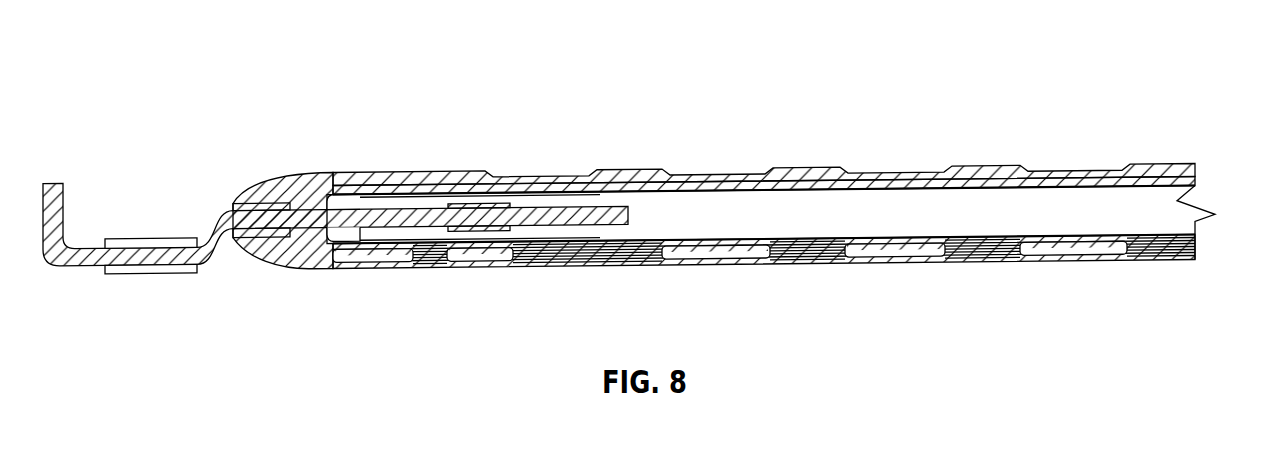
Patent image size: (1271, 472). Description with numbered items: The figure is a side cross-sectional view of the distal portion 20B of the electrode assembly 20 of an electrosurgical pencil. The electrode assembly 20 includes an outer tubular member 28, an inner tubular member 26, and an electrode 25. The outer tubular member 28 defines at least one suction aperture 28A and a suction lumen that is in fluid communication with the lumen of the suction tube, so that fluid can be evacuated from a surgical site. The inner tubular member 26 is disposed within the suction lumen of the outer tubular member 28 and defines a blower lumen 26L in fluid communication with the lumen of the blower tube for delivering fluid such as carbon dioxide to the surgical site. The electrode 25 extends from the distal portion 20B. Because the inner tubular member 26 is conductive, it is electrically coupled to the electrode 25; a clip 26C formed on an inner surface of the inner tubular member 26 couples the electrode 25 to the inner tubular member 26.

The electrode assembly 20 is at (853, 88).
The distal portion of the electrode assembly 20B is at (213, 66).
The electrode 25 is at (147, 258).
The inner tubular member 26 is at (710, 248).
The clip 26C is at (463, 232).
The blower lumen 26L is at (1152, 226).
The outer tubular member 28 is at (628, 172).
The suction aperture 28A is at (549, 186).